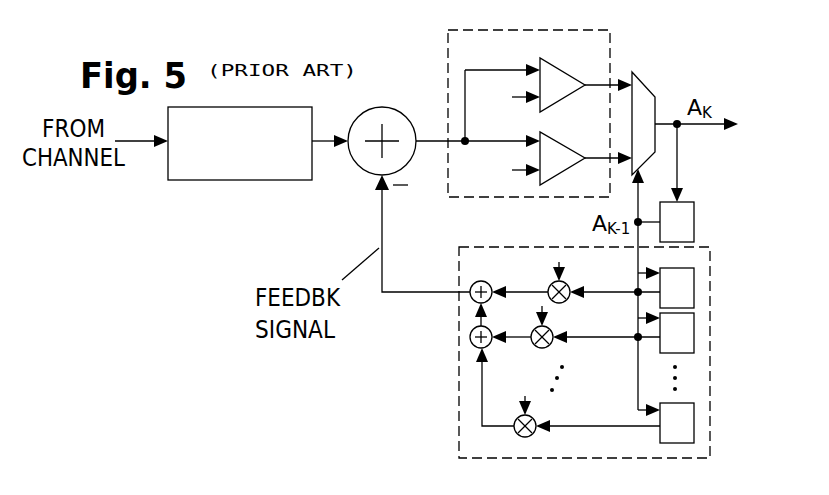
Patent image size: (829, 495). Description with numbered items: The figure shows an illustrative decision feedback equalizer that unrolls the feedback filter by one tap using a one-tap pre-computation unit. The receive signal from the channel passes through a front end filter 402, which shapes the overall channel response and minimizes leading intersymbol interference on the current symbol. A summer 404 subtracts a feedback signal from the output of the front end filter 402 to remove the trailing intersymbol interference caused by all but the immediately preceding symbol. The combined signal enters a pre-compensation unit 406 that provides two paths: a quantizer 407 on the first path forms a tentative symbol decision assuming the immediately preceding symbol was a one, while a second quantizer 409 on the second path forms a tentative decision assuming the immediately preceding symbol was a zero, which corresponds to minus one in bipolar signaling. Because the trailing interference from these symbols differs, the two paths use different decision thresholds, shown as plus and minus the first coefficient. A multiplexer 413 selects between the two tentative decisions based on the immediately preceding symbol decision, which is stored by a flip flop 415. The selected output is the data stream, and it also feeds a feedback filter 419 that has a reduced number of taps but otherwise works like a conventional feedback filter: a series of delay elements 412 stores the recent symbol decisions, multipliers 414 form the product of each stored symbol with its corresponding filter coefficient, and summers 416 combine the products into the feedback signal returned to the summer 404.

The front end filter 402 is at (223, 182).
The summer 404 is at (361, 170).
The pre-compensation unit 406 is at (447, 47).
The quantizer 407 is at (560, 65).
The second quantizer 409 is at (560, 139).
The delay elements 412 is at (695, 286).
The multiplexer 413 is at (641, 83).
The multipliers 414 is at (563, 302).
The flip flop 415 is at (697, 219).
The summers 416 is at (471, 297).
The feedback filter 419 is at (458, 433).